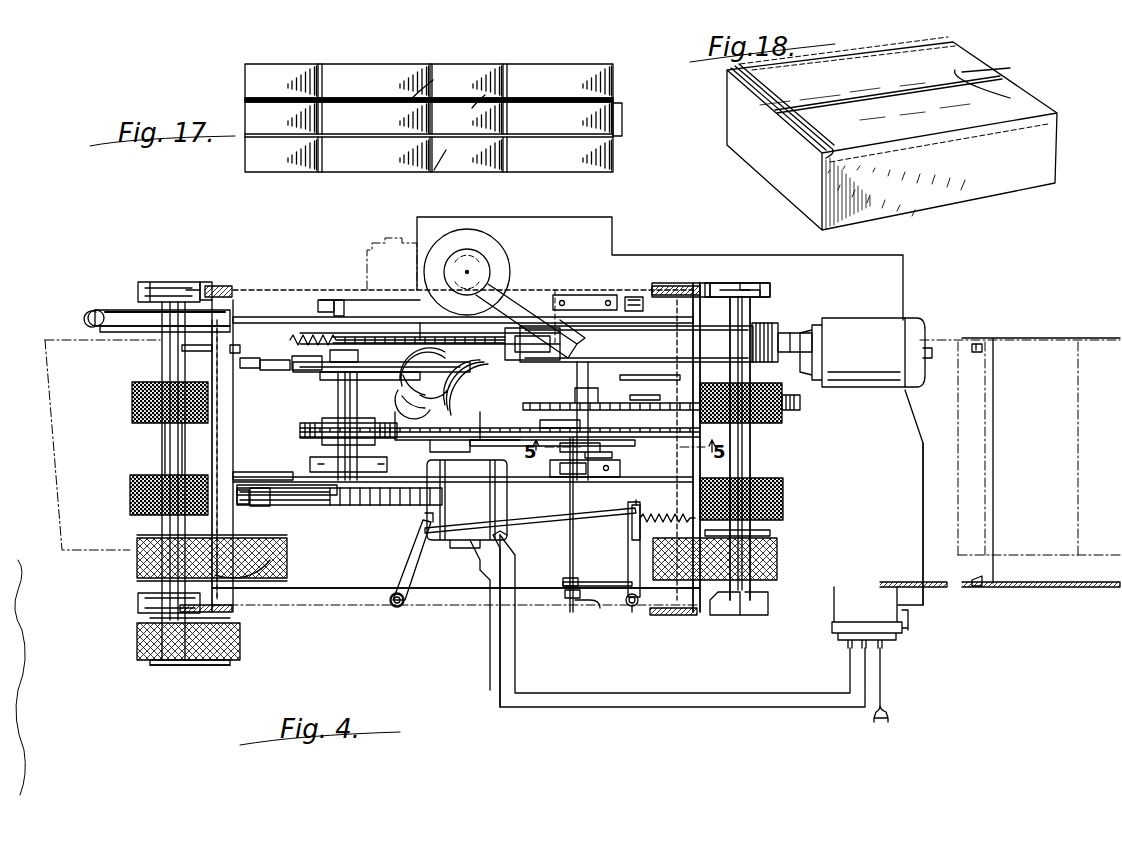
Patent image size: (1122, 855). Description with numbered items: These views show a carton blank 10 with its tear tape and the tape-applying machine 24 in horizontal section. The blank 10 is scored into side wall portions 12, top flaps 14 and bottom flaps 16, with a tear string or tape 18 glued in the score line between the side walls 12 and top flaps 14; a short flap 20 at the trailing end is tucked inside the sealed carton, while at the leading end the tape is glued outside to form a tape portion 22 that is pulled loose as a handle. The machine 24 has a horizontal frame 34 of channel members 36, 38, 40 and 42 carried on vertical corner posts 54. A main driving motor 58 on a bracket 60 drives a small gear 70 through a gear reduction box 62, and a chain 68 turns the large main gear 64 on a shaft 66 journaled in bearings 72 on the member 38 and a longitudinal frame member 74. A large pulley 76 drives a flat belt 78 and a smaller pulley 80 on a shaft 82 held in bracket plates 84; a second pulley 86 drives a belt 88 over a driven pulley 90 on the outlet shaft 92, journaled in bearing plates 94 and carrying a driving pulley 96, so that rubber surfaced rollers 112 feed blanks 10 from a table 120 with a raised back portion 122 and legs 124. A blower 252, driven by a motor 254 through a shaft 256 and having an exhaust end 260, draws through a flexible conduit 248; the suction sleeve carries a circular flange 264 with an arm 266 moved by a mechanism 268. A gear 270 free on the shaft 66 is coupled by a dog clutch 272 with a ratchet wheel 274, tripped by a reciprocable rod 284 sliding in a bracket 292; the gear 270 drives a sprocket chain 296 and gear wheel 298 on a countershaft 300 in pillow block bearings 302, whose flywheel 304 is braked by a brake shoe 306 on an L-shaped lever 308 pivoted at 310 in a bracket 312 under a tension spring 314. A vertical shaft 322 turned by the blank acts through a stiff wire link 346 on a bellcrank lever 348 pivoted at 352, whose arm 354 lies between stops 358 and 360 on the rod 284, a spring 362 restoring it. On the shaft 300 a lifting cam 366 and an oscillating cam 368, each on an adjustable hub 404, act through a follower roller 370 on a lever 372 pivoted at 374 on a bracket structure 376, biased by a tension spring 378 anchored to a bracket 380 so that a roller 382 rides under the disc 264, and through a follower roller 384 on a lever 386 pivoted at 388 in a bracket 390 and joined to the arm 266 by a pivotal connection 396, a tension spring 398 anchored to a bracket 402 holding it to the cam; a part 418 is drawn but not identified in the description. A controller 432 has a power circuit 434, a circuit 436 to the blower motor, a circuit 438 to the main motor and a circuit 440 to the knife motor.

In FIG. 17, the carton blank 10 is at (230, 164).
In FIG. 4, the carton blank 10 is at (74, 353).
In FIG. 17, the side wall portions 12 is at (340, 118).
In FIG. 18, the side wall portions 12 is at (766, 165).
In FIG. 17, the top flaps 14 is at (440, 80).
In FIG. 18, the top flaps 14 is at (1020, 98).
In FIG. 17, the bottom flaps 16 is at (415, 165).
In FIG. 17, the tear string or tape 18 is at (478, 90).
In FIG. 17, the extension or flap 20 is at (622, 115).
In FIG. 18, the tape portion 22 is at (748, 95).
In FIG. 4, the machine 24 is at (113, 289).
In FIG. 4, the horizontally disposed frame 34 is at (494, 603).
In FIG. 4, the channel member 36 is at (470, 605).
In FIG. 4, the channel member 38 is at (635, 300).
In FIG. 4, the channel member 40 is at (215, 440).
In FIG. 4, the channel member 42 is at (685, 504).
In FIG. 4, the vertical corner posts 54 is at (245, 278).
In FIG. 4, the main driving motor 58 is at (900, 348).
In FIG. 4, the bracket 60 is at (836, 325).
In FIG. 4, the gear reduction box 62 is at (790, 340).
In FIG. 4, the large main gear 64 is at (624, 392).
In FIG. 4, the shaft 66 is at (630, 298).
In FIG. 4, the chain 68 is at (668, 390).
In FIG. 4, the small gear 70 is at (795, 410).
In FIG. 4, the bearings 72 is at (573, 300).
In FIG. 4, the longitudinal frame member 74 is at (258, 472).
In FIG. 4, the large pulley 76 is at (668, 366).
In FIG. 4, the flat belt 78 is at (660, 352).
In FIG. 4, the smaller pulley 80 is at (765, 325).
In FIG. 4, the shaft 82 is at (752, 462).
In FIG. 4, the bracket plates 84 is at (690, 290).
In FIG. 4, the second pulley 86 is at (780, 534).
In FIG. 4, the belt 88 is at (138, 560).
In FIG. 4, the driven pulley 90 is at (140, 602).
In FIG. 4, the shaft 92 is at (160, 527).
In FIG. 4, the bearing plates 94 is at (175, 282).
In FIG. 4, the driving pulley 96 is at (178, 665).
In FIG. 4, the rubber surfaced rollers 112 is at (130, 402).
In FIG. 4, the table 120 is at (1060, 578).
In FIG. 4, the raised back portion 122 is at (1098, 340).
In FIG. 4, the legs 124 is at (978, 355).
In FIG. 4, the flexible conduit 248 is at (465, 385).
In FIG. 4, the blower 252 is at (500, 406).
In FIG. 4, the motor 254 is at (478, 540).
In FIG. 4, the shaft 256 is at (435, 462).
In FIG. 4, the exhaust end 260 is at (560, 345).
In FIG. 4, the circular flange 264 is at (467, 255).
In FIG. 4, the arm 266 is at (503, 300).
In FIG. 4, the mechanism 268 is at (304, 388).
In FIG. 4, the gear 270 is at (620, 428).
In FIG. 4, the dog clutch 272 is at (550, 428).
In FIG. 4, the ratchet wheel 274 is at (600, 455).
In FIG. 4, the longitudinally reciprocable rod 284 is at (572, 543).
In FIG. 4, the bracket 292 is at (572, 598).
In FIG. 4, the sprocket chain 296 is at (475, 441).
In FIG. 4, the gear wheel 298 is at (325, 440).
In FIG. 4, the shaft 300 is at (358, 412).
In FIG. 4, the pillow block bearings 302 is at (322, 310).
In FIG. 4, the flywheel 304 is at (290, 490).
In FIG. 4, the brake shoe 306 is at (270, 505).
In FIG. 4, the L-shaped lever 308 is at (245, 505).
In FIG. 4, the pivot 310 is at (215, 442).
In FIG. 4, the bracket 312 is at (280, 560).
In FIG. 4, the tension spring 314 is at (200, 478).
In FIG. 4, the vertical shaft 322 is at (390, 603).
In FIG. 4, the stiff wire link 346 is at (545, 518).
In FIG. 4, the bellcrank lever 348 is at (630, 540).
In FIG. 4, the pivot 352 is at (632, 612).
In FIG. 4, the arm 354 is at (608, 584).
In FIG. 4, the adjustable stop 358 is at (590, 610).
In FIG. 4, the adjustable stop 360 is at (565, 583).
In FIG. 4, the spring 362 is at (652, 522).
In FIG. 4, the lifting cam 366 is at (328, 300).
In FIG. 4, the oscillating cam 368 is at (318, 372).
In FIG. 4, the follower roller 370 is at (340, 300).
In FIG. 4, the lever 372 is at (245, 300).
In FIG. 4, the pivot 374 is at (200, 338).
In FIG. 4, the bracket structure 376 is at (208, 300).
In FIG. 4, the tension spring 378 is at (115, 315).
In FIG. 4, the bracket 380 is at (210, 295).
In FIG. 4, the roller 382 is at (493, 272).
In FIG. 4, the follower roller 384 is at (272, 372).
In FIG. 4, the lever 386 is at (205, 348).
In FIG. 4, the pivot 388 is at (255, 368).
In FIG. 4, the bracket 390 is at (232, 350).
In FIG. 4, the pivotal connection 396 is at (545, 336).
In FIG. 4, the tension spring 398 is at (296, 343).
In FIG. 4, the bracket 402 is at (556, 292).
In FIG. 4, the hub 404 is at (400, 380).
In FIG. 4, the switch housing 418 is at (394, 243).
In FIG. 4, the controller 432 is at (908, 625).
In FIG. 4, the circuit 434 is at (905, 680).
In FIG. 4, the circuit 436 is at (742, 705).
In FIG. 4, the circuit 438 is at (922, 518).
In FIG. 4, the circuit 440 is at (905, 297).